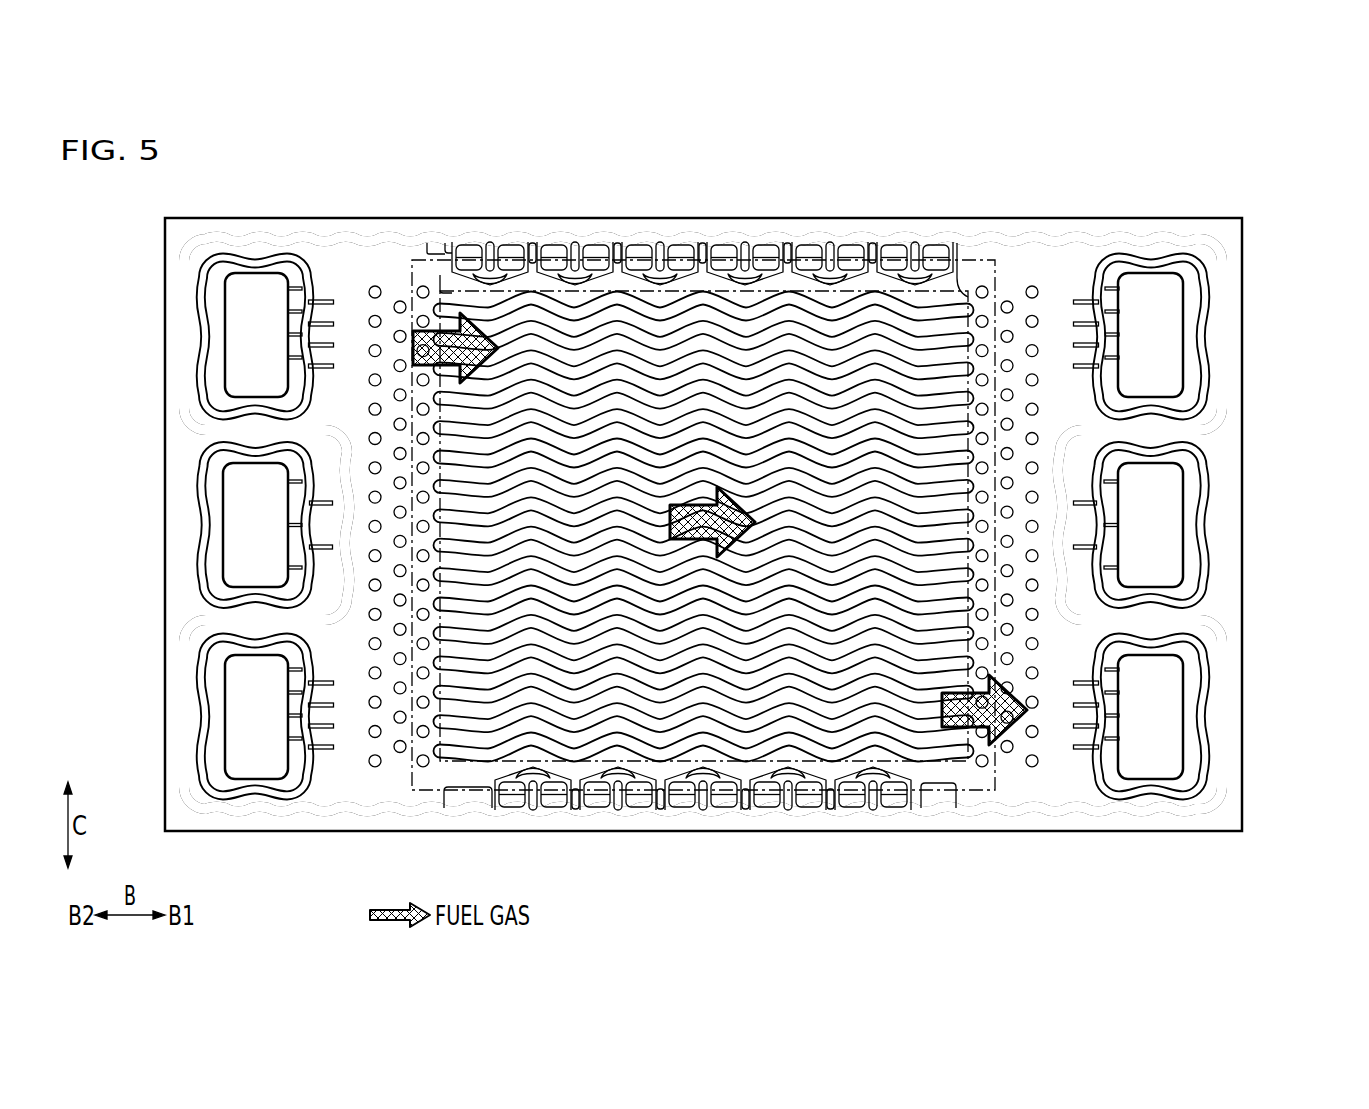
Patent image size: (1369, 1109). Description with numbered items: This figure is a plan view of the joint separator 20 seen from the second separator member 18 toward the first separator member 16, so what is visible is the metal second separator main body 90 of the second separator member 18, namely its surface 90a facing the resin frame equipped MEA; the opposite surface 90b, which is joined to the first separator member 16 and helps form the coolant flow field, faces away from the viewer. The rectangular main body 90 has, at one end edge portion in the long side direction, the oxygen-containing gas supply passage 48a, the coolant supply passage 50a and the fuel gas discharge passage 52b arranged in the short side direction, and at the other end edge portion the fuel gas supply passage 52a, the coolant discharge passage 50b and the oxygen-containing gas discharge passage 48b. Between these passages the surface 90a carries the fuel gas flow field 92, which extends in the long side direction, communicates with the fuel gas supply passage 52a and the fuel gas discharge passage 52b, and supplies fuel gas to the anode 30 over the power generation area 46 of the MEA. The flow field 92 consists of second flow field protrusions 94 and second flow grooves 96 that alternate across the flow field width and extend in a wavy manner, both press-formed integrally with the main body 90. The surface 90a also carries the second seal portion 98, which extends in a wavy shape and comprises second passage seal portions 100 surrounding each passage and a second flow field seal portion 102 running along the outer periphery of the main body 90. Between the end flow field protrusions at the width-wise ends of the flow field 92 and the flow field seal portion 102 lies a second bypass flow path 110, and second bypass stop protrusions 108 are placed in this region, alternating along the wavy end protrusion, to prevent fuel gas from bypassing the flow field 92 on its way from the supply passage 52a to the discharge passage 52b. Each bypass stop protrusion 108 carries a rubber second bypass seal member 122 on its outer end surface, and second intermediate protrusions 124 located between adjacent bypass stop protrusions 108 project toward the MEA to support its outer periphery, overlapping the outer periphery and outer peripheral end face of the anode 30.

The first separator member 16 is at (576, 208).
The second separator member 18 is at (553, 208).
The separator member 20 is at (1237, 152).
The anode 30 is at (747, 469).
The power generation area 46 is at (938, 762).
The oxygen-containing gas supply passage 48a is at (1163, 320).
The oxygen-containing gas discharge passage 48b is at (240, 697).
The coolant supply passage 50a is at (1168, 503).
The coolant discharge passage 50b is at (235, 500).
The fuel gas supply passage 52a is at (232, 300).
The fuel gas discharge passage 52b is at (1165, 700).
The second separator main body 90 is at (278, 236).
The surface of the second separator main body 90a is at (467, 236).
The surface of the second separator main body 90b is at (512, 242).
The fuel gas flow field 92 is at (707, 526).
The second flow field protrusion 94 is at (636, 320).
The second flow groove 96 is at (668, 310).
The second seal portion 98 is at (1218, 877).
The second passage seal portion 100 is at (208, 322).
The second flow field seal portion 102 is at (1137, 812).
The second bypass stop protrusion 108 is at (706, 523).
The second bypass flow path 110 is at (442, 270).
The second bypass seal member 122 is at (427, 243).
The second intermediate protrusion 124 is at (930, 245).